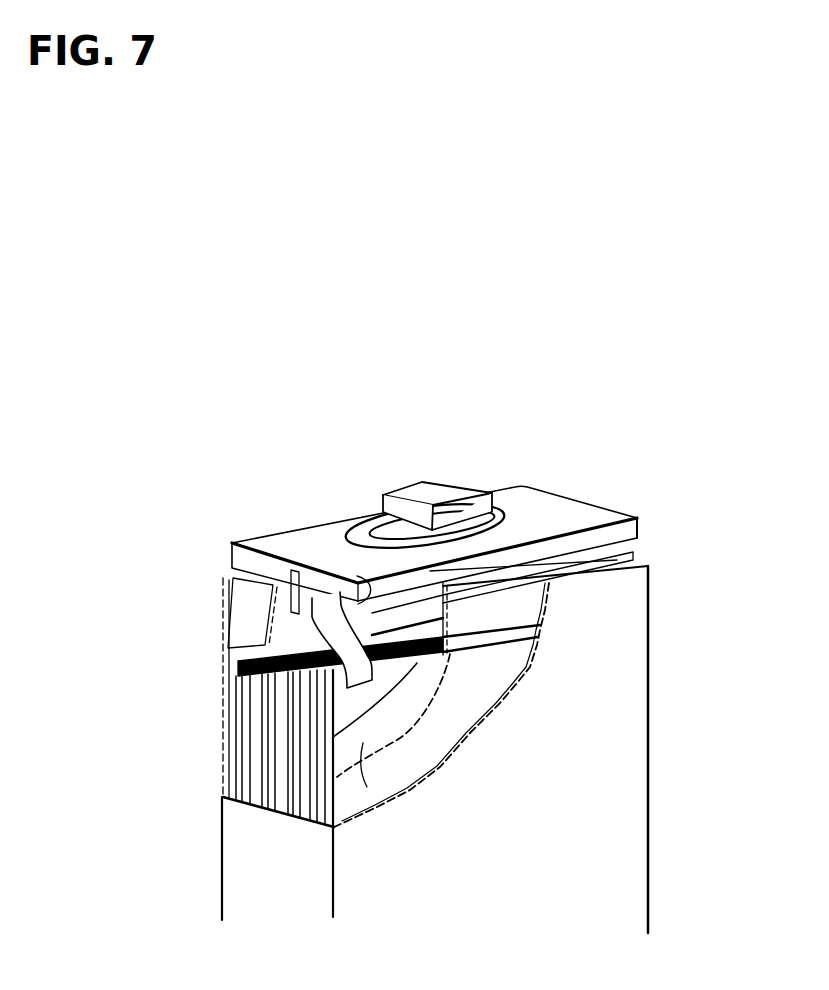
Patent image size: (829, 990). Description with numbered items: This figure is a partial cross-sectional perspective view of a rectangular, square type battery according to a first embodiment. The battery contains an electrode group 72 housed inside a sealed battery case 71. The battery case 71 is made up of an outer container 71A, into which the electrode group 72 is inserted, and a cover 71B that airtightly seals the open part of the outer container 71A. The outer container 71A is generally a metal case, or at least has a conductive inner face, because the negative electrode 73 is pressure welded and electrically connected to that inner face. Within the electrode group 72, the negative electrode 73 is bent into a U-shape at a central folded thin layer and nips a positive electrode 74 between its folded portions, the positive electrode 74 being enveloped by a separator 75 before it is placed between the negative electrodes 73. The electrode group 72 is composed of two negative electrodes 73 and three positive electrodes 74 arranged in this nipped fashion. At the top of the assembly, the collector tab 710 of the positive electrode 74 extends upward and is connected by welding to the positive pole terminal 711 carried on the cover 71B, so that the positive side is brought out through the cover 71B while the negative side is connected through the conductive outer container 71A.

The battery case 71 is at (686, 600).
The outer container 71A is at (232, 891).
The cover 71B is at (555, 518).
The collector tab 710 is at (372, 596).
The positive pole terminal 711 is at (432, 492).
The electrode group 72 is at (252, 653).
The negative electrode 73 is at (430, 767).
The positive electrode 74 is at (373, 702).
The separator 75 is at (367, 787).